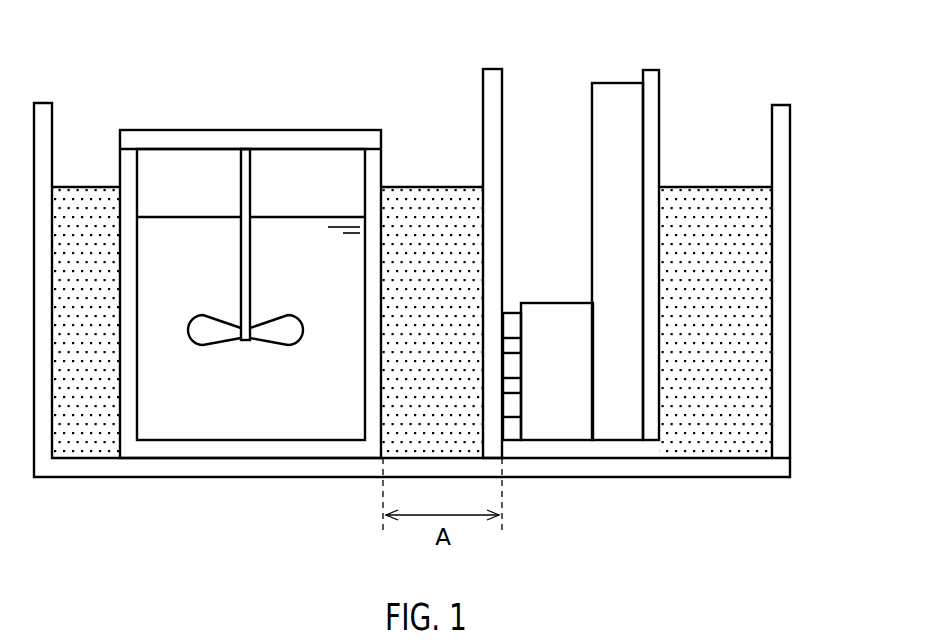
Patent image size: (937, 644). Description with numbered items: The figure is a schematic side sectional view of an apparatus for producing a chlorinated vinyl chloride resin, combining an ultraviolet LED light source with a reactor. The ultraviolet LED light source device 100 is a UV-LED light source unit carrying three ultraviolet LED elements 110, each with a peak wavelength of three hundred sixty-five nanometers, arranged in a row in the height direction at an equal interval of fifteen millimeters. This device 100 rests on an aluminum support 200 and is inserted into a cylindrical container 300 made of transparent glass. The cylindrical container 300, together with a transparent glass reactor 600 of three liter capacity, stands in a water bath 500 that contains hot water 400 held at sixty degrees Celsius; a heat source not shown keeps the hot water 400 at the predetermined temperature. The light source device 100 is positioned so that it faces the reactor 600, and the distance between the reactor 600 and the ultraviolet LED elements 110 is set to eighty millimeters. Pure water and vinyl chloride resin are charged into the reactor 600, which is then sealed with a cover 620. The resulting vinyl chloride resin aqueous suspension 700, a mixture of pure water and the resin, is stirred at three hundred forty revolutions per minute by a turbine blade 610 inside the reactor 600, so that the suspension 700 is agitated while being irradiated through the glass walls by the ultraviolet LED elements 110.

The ultraviolet LED light source device 100 is at (558, 320).
The ultraviolet LED elements 110 is at (512, 325).
The support 200 is at (618, 93).
The cylindrical container 300 is at (494, 80).
The hot water 400 is at (718, 198).
The water bath 500 is at (782, 115).
The reactor 600 is at (373, 165).
The turbine blade 610 is at (212, 333).
The cover 620 is at (243, 140).
The vinyl chloride resin aqueous suspension 700 is at (296, 410).